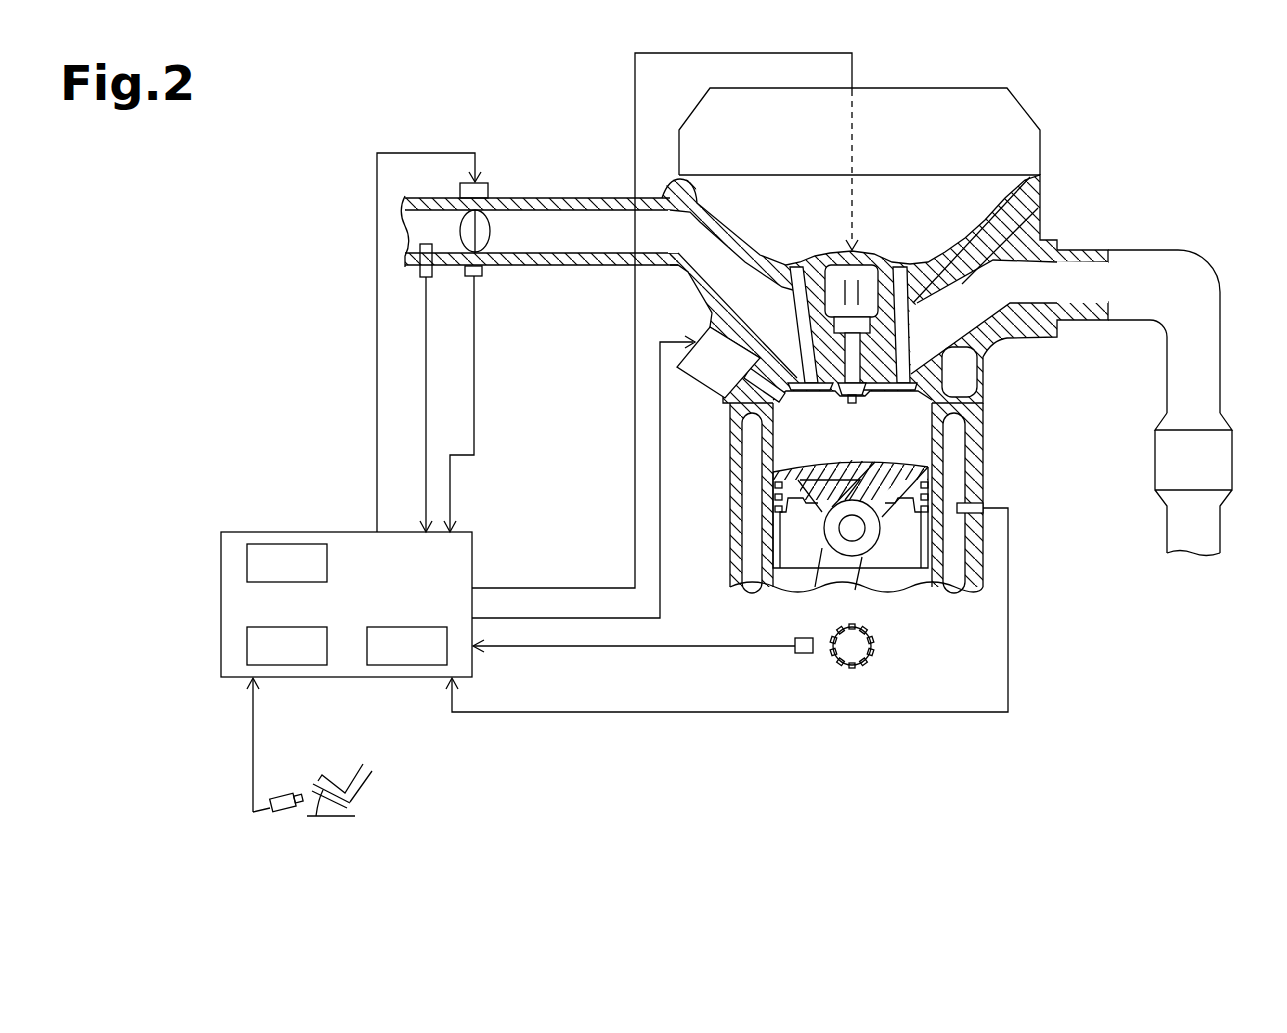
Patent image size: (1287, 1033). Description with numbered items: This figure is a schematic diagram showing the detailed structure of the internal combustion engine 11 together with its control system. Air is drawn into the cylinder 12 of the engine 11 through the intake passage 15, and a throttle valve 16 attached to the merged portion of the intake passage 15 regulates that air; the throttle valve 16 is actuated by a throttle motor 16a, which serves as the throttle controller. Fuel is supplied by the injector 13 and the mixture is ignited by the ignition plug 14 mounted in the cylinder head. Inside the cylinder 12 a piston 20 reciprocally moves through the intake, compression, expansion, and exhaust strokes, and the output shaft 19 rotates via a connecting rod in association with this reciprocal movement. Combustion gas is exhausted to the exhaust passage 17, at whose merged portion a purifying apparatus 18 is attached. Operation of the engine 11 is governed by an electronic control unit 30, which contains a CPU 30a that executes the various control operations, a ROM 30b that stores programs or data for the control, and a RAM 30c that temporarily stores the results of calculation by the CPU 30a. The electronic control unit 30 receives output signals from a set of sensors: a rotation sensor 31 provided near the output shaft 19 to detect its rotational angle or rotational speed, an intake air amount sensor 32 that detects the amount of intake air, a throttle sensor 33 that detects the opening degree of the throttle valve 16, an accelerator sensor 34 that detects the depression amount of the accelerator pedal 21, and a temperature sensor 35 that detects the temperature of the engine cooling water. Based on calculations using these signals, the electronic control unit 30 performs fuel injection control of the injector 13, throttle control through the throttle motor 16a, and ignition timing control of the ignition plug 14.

The internal combustion engine 11 is at (1016, 97).
The cylinder 12 is at (1002, 408).
The injector 13 is at (708, 362).
The ignition plug 14 is at (862, 397).
The intake passage 15 is at (572, 210).
The throttle valve 16 is at (460, 230).
The throttle motor 16a is at (487, 192).
The exhaust passage 17 is at (1208, 262).
The purifying apparatus 18 is at (1153, 455).
The output shaft 19 is at (874, 644).
The piston 20 is at (816, 487).
The accelerator pedal 21 is at (348, 803).
The electronic control unit 30 is at (221, 598).
The CPU 30a is at (247, 557).
The ROM 30b is at (247, 640).
The RAM 30c is at (388, 627).
The rotation sensor 31 is at (805, 638).
The intake air amount sensor 32 is at (420, 277).
The throttle sensor 33 is at (466, 277).
The accelerator sensor 34 is at (275, 814).
The temperature sensor 35 is at (983, 506).